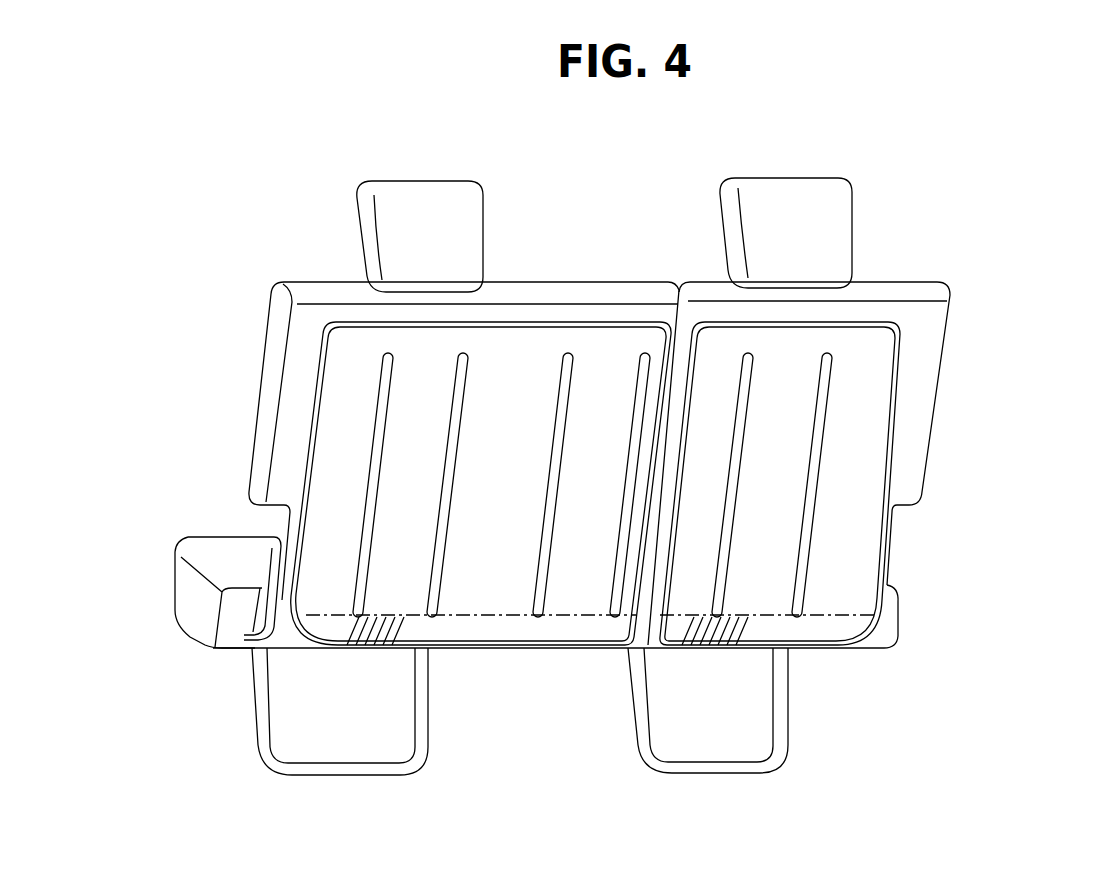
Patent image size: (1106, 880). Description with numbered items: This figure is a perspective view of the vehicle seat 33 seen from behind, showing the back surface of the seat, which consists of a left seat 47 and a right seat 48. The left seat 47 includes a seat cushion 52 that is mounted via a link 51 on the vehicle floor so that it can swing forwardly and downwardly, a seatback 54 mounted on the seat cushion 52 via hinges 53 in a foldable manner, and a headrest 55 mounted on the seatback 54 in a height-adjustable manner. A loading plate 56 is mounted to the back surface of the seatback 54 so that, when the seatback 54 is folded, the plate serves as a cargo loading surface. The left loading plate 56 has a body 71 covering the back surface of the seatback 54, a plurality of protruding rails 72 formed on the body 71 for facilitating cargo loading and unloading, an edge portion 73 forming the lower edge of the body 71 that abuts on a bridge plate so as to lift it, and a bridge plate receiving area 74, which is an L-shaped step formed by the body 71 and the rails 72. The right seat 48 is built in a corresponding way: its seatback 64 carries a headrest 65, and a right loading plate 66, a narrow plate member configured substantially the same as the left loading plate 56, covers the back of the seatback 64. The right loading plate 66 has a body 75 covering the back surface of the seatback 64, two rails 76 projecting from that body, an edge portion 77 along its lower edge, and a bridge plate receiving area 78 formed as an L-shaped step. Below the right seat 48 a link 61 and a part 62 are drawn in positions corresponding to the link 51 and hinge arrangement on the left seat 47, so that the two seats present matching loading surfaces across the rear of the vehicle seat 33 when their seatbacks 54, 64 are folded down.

The vehicle seat 33 is at (177, 90).
The left seat 47 is at (209, 358).
The right seat 48 is at (1000, 319).
The link 51 is at (252, 715).
The seat cushion 52 is at (172, 534).
The hinge 53 is at (272, 546).
The seatback 54 is at (563, 263).
The headrest 55 is at (404, 195).
The loading plate 56 is at (486, 322).
The right seat leg 61 is at (632, 705).
The latch 62 is at (911, 581).
The seatback 64 is at (894, 262).
The right headrest 65 is at (786, 190).
The right loading plate 66 is at (803, 320).
The body 71 is at (350, 382).
The protruding rail 72 is at (455, 475).
The edge portion 73 is at (508, 648).
The bridge plate receiving area 74 is at (366, 648).
The body 75 is at (876, 425).
The rail 76 is at (822, 445).
The edge portion 77 is at (820, 648).
The bridge plate receiving area 78 is at (715, 648).